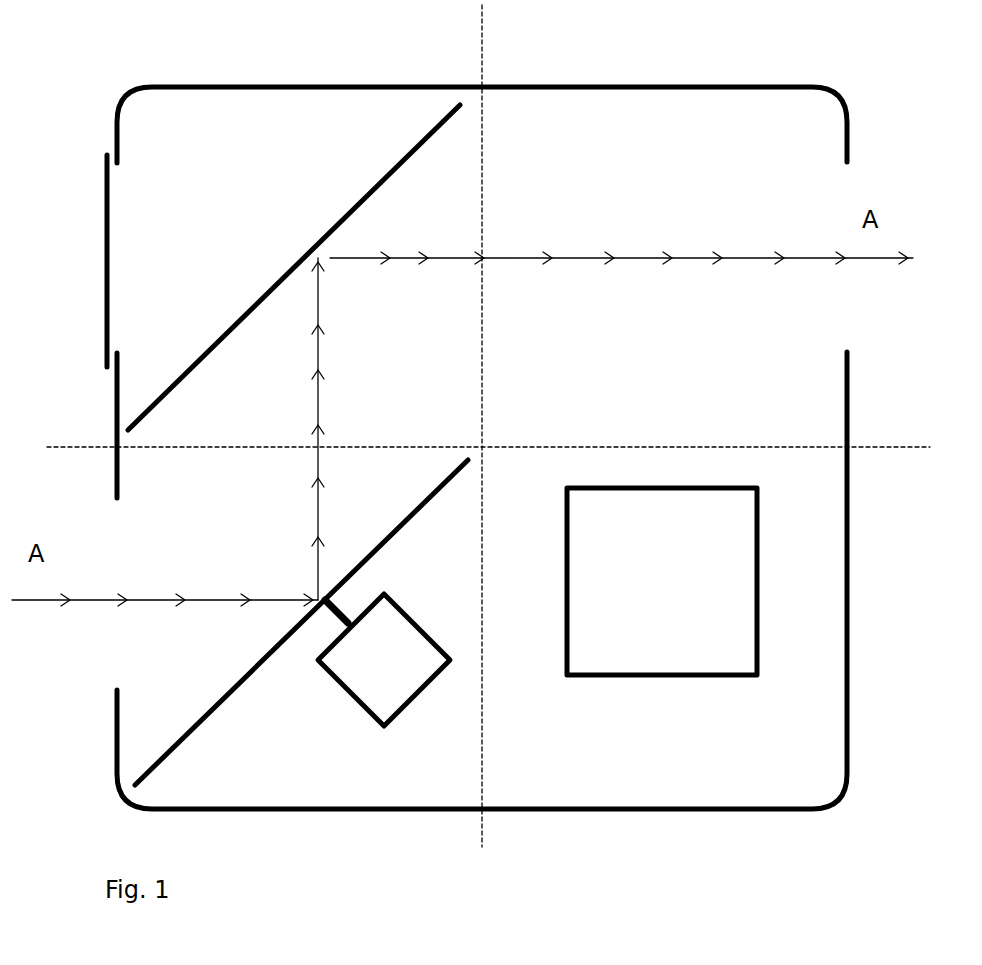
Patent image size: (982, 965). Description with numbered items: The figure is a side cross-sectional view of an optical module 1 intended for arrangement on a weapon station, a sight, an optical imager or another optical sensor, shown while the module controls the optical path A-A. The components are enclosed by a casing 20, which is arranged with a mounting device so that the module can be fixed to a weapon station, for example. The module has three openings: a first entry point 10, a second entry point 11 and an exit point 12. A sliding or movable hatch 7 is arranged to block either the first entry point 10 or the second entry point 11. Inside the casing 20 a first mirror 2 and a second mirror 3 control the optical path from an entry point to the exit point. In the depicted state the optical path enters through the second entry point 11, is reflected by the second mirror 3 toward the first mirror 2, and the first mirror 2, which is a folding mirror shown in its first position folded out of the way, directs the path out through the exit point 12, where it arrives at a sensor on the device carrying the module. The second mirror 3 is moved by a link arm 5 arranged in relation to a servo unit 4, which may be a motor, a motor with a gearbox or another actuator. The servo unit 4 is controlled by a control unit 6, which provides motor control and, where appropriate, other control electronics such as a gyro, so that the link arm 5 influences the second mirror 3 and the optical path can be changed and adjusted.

The optical module 1 is at (41, 81).
The first mirror 2 is at (342, 159).
The second mirror 3 is at (173, 692).
The servo unit 4 is at (385, 650).
The link arm 5 is at (314, 636).
The control unit 6 is at (672, 623).
The hatch 7 is at (80, 259).
The first entry point 10 is at (135, 233).
The second entry point 11 is at (145, 526).
The exit point 12 is at (870, 168).
The casing 20 is at (429, 830).